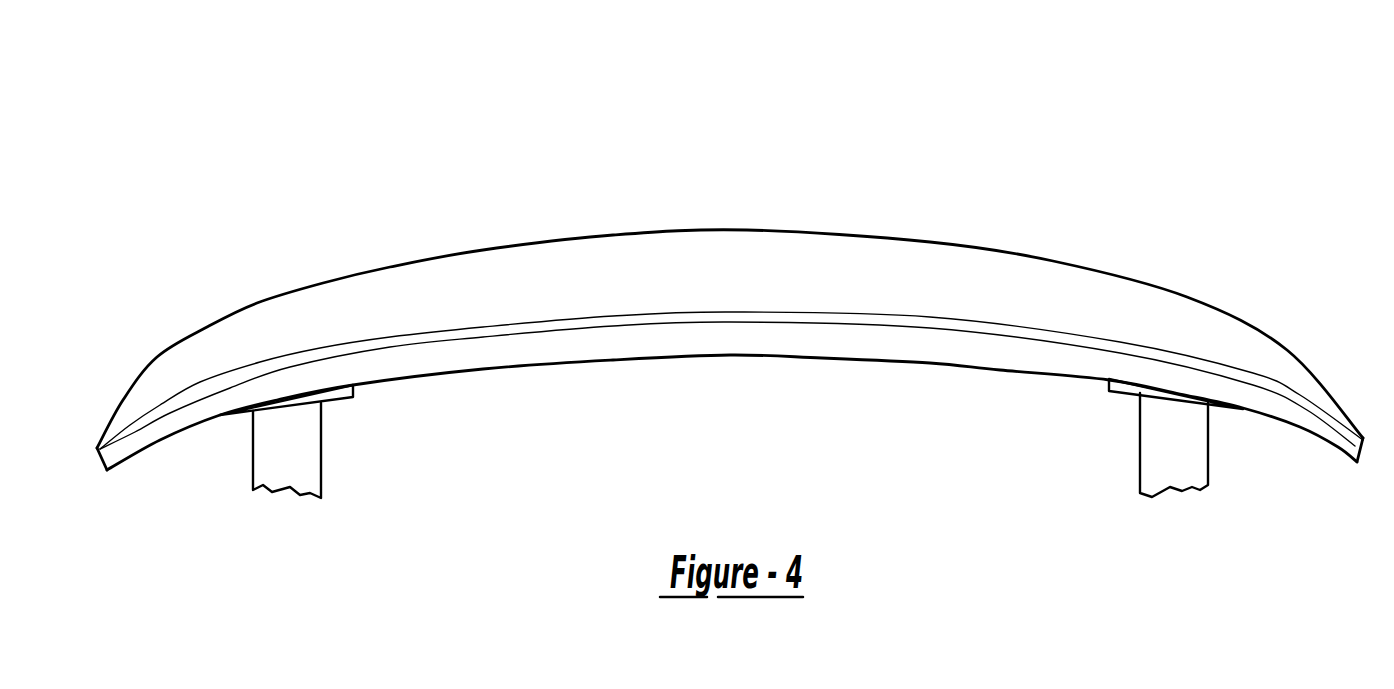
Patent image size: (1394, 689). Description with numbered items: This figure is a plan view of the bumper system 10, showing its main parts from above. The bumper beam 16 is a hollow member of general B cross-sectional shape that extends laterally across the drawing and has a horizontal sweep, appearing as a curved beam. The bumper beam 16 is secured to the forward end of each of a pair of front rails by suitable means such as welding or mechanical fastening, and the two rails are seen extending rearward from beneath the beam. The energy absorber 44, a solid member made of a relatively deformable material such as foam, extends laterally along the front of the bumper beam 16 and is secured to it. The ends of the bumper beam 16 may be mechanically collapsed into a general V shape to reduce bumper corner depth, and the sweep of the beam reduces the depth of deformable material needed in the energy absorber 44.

The bumper system 10 is at (1136, 164).
The energy absorber 44 is at (673, 253).
The bumper beam 16 is at (822, 358).